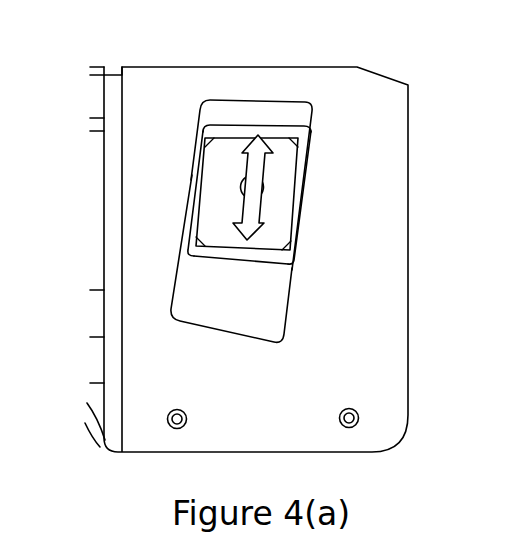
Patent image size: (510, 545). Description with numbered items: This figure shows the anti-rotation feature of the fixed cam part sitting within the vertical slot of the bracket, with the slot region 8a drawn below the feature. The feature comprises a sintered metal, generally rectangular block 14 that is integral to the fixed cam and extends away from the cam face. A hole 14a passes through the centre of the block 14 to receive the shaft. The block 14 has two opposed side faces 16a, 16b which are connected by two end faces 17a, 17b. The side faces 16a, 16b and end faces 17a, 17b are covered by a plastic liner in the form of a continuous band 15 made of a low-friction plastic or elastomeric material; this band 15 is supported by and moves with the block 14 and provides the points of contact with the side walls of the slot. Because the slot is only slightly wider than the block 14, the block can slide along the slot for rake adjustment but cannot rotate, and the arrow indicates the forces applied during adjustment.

The slide tab 8a is at (294, 297).
The block 14 is at (302, 170).
The hole 14a is at (241, 185).
The band 15 is at (305, 152).
The side face 16a is at (197, 213).
The side face 16b is at (297, 217).
The end face 17a is at (270, 147).
The end face 17b is at (233, 262).